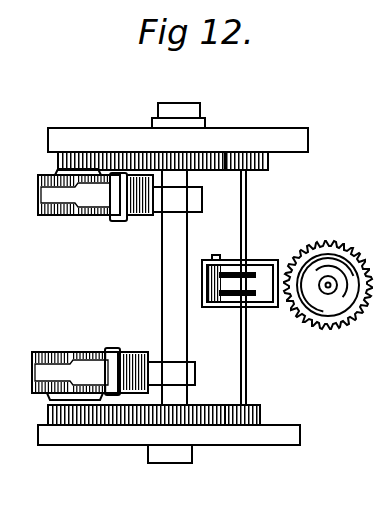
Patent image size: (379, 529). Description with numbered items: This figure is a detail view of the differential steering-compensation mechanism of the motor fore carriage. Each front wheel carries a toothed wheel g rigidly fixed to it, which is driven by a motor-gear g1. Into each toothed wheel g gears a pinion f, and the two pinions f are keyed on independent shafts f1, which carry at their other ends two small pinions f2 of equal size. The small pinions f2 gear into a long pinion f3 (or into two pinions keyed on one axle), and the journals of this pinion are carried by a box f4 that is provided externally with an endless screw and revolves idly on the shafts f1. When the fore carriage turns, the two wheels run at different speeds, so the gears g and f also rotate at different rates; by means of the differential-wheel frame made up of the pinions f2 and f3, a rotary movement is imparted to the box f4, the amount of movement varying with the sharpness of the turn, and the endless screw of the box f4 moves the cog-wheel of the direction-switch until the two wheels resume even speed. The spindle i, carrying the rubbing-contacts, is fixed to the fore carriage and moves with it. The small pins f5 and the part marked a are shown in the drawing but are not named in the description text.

The toothed wheel g is at (103, 150).
The motor-gear g1 is at (36, 414).
The pinion f is at (268, 160).
The independent shaft f1 is at (248, 203).
The small pinion f2 is at (258, 263).
The long pinion f3 is at (216, 257).
The box f4 is at (266, 296).
The pin f5 is at (257, 295).
The gear wheel a is at (331, 330).
The spindle i is at (330, 283).